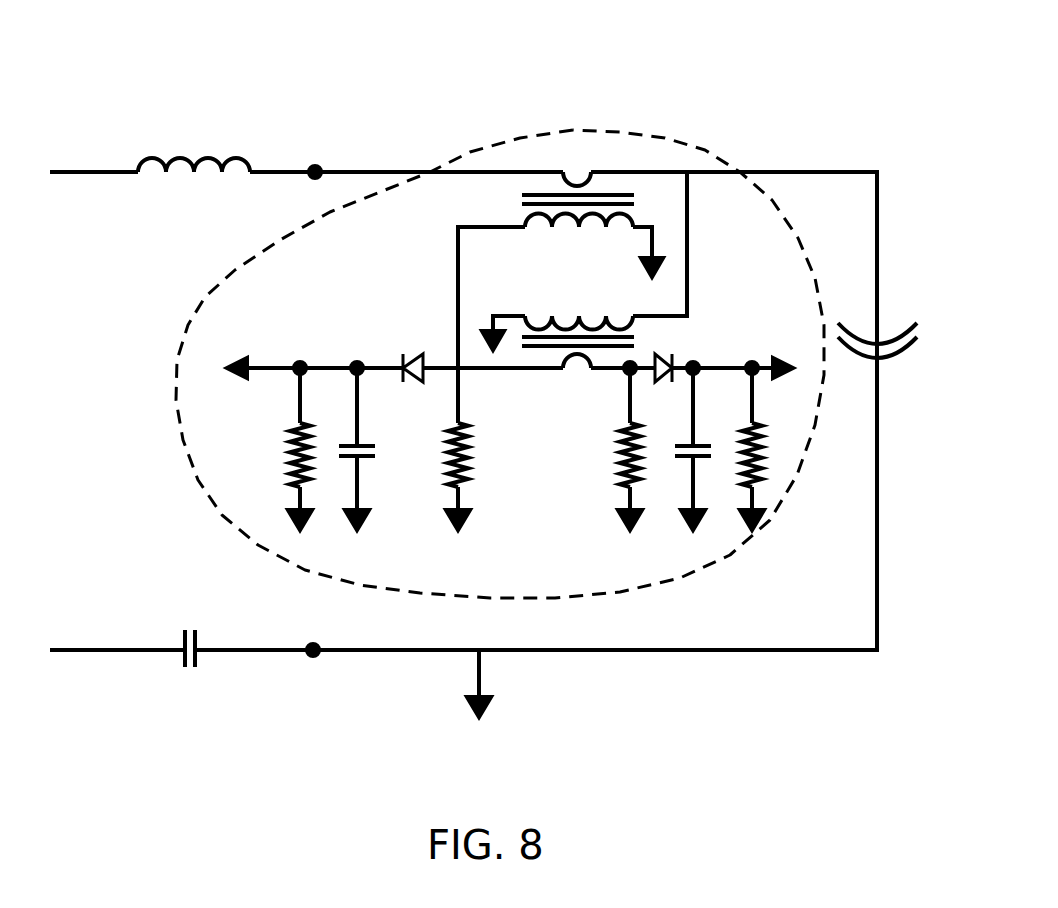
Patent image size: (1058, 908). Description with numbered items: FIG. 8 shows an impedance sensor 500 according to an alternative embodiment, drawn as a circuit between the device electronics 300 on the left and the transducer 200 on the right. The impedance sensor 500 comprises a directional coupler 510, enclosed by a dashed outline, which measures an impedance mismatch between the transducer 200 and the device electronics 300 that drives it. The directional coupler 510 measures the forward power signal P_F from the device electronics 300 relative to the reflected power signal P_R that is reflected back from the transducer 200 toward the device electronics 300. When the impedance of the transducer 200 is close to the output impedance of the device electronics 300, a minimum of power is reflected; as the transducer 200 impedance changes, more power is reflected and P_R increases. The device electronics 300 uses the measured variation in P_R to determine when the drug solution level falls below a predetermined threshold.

The device electronics 300 is at (78, 102).
The directional coupler 510 is at (573, 130).
The impedance sensor 500 is at (144, 327).
The transducer 200 is at (889, 353).